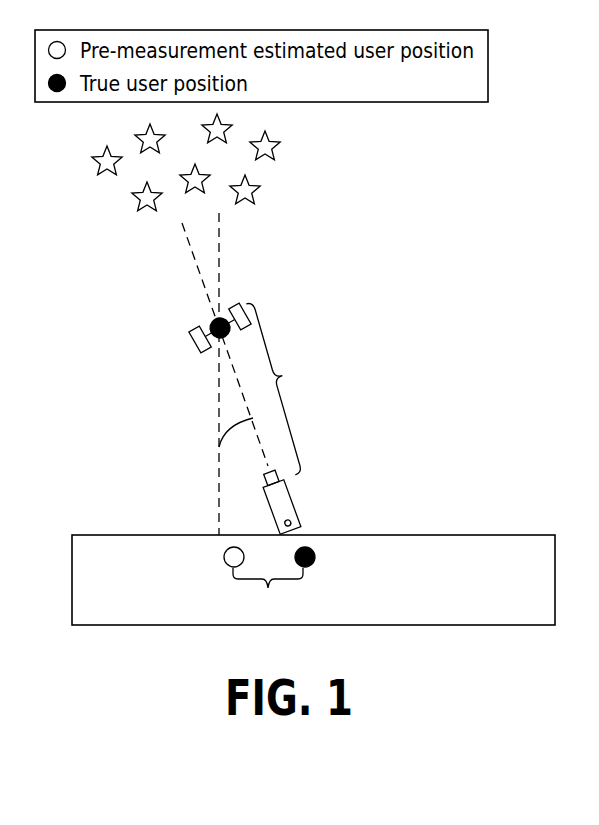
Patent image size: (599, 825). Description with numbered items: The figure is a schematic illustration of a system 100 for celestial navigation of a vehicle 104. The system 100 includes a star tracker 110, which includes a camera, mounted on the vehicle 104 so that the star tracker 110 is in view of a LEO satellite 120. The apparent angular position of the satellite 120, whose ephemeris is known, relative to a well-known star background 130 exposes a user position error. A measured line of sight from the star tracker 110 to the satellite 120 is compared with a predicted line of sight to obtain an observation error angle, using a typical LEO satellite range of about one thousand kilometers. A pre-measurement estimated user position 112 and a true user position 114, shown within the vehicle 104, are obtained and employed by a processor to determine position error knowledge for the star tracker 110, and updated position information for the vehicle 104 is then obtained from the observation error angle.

The system 100 is at (500, 347).
The vehicle 104 is at (547, 566).
The star tracker 110 is at (293, 497).
The pre-measurement estimated user position 112 is at (224, 556).
The true user position 114 is at (315, 557).
The LEO satellite 120 is at (193, 347).
The star background 130 is at (307, 183).